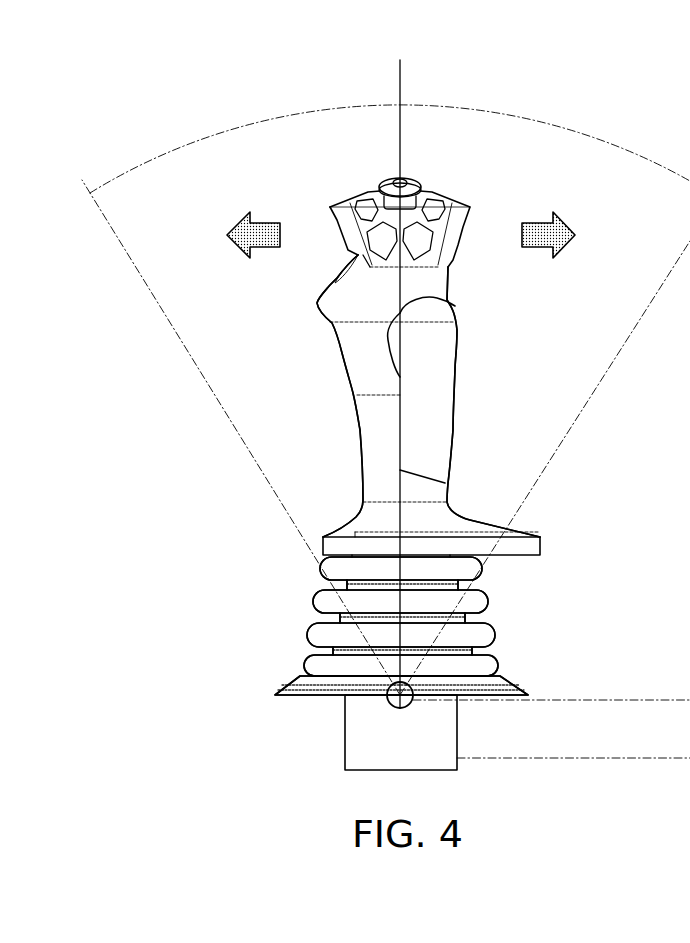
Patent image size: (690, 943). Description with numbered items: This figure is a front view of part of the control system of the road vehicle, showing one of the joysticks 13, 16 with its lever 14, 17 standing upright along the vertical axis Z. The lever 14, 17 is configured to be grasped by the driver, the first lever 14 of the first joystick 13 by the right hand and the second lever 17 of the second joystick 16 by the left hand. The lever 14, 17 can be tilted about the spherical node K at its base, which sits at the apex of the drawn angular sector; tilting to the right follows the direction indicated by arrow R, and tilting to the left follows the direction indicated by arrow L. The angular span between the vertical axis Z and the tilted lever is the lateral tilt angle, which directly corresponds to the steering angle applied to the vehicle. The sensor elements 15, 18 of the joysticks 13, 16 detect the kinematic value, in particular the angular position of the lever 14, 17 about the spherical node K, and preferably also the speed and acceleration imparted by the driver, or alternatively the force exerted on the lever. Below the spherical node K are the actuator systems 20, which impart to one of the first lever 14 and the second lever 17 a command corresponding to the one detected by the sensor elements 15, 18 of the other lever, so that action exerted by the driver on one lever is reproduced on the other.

The first joystick 13 is at (352, 373).
The second joystick 16 is at (352, 373).
The first lever 14 is at (443, 360).
The second lever 17 is at (443, 360).
The first sensor elements 15 is at (367, 690).
The second sensor elements 18 is at (367, 690).
The actuator systems 20 is at (357, 740).
The spherical node K is at (400, 702).
The vertical axis Z is at (398, 90).
The arrow L is at (237, 224).
The arrow R is at (560, 218).